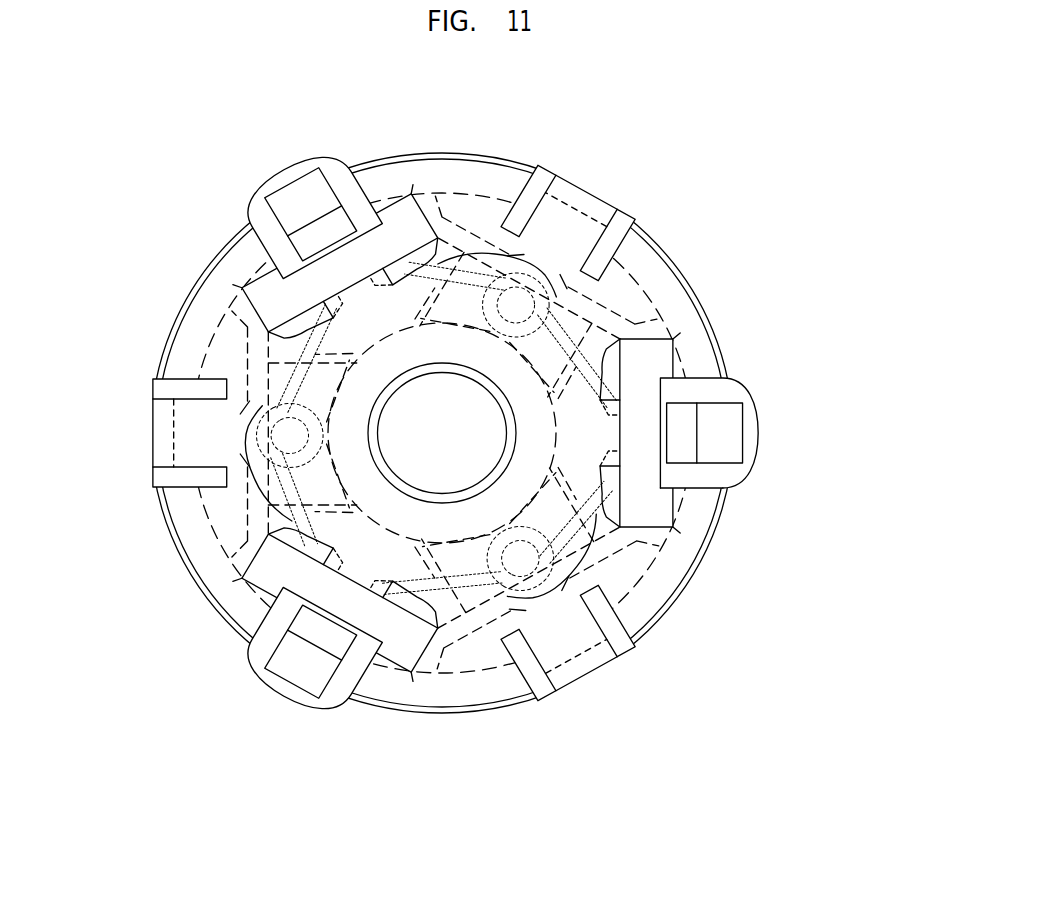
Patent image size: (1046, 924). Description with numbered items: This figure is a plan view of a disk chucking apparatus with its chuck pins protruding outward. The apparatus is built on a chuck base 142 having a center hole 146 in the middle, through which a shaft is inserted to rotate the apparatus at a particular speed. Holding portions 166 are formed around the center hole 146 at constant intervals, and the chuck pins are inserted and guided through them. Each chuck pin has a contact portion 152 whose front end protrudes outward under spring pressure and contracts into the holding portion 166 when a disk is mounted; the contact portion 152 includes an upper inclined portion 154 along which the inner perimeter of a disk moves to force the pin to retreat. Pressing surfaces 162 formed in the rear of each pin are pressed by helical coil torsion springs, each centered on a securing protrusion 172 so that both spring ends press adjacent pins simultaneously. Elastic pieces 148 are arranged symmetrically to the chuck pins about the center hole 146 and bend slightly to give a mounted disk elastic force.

The chuck base 142 is at (648, 252).
The center hole 146 is at (430, 475).
The elastic pieces 148 is at (158, 433).
The contact portion 152 is at (733, 388).
The upper inclined portion 154 is at (744, 421).
The pressing surfaces 162 is at (614, 333).
The holding portions 166 is at (707, 490).
The securing protrusion 172 is at (512, 300).